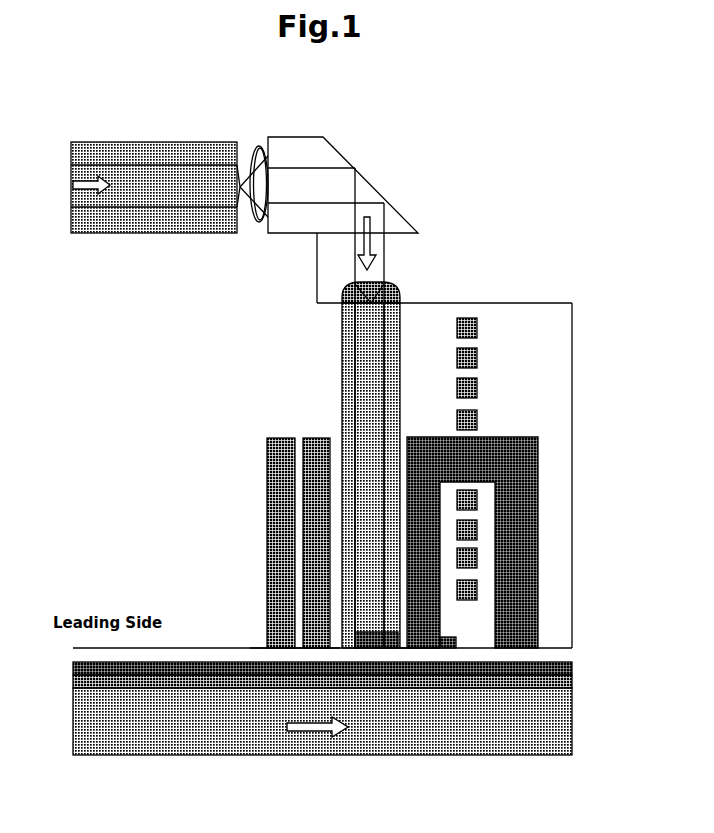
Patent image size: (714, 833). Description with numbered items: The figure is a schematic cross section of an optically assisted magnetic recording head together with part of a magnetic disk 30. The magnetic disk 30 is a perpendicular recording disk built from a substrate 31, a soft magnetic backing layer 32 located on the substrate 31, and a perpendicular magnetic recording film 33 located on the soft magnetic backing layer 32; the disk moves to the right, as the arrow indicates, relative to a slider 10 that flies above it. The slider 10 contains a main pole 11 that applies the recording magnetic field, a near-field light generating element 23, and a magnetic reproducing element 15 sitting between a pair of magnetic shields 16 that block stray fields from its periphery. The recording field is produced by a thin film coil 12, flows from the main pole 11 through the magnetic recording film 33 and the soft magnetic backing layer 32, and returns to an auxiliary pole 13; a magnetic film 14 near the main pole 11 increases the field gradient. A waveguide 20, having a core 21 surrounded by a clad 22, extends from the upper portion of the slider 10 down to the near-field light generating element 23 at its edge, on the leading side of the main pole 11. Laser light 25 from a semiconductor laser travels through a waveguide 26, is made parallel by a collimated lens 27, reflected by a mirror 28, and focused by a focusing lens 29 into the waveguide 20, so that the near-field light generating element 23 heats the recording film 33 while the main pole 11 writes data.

The slider 10 is at (146, 322).
The main pole 11 is at (408, 650).
The thin film coil 12 is at (473, 390).
The auxiliary pole 13 is at (527, 605).
The magnetic film 14 is at (465, 626).
The magnetic reproducing element 15 is at (300, 633).
The magnetic shields 16 is at (272, 533).
The waveguide 20 is at (335, 475).
The core 21 is at (359, 355).
The clad 22 is at (343, 323).
The near-field light generating element 23 is at (373, 650).
The laser light 25 is at (350, 242).
The waveguide 26 is at (167, 186).
The collimated lens 27 is at (263, 160).
The mirror 28 is at (356, 220).
The focusing lens 29 is at (388, 288).
The magnetic disk 30 is at (335, 707).
The substrate 31 is at (560, 723).
The soft magnetic backing layer 32 is at (572, 682).
The perpendicular magnetic recording film 33 is at (572, 667).